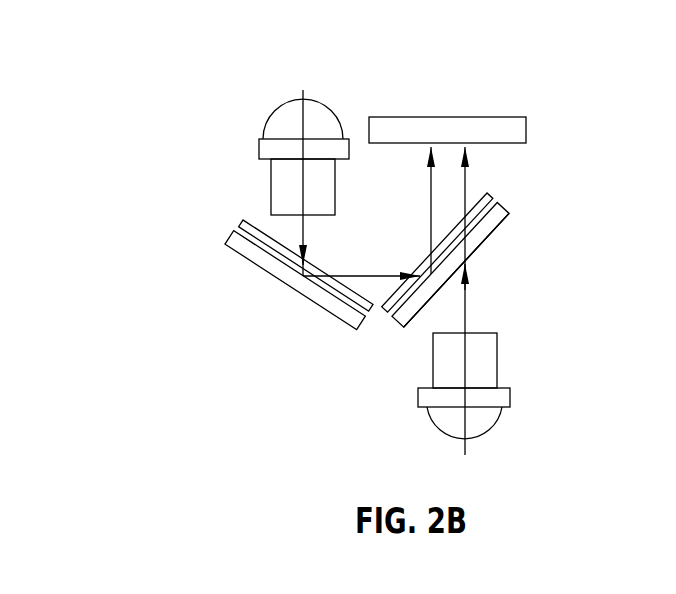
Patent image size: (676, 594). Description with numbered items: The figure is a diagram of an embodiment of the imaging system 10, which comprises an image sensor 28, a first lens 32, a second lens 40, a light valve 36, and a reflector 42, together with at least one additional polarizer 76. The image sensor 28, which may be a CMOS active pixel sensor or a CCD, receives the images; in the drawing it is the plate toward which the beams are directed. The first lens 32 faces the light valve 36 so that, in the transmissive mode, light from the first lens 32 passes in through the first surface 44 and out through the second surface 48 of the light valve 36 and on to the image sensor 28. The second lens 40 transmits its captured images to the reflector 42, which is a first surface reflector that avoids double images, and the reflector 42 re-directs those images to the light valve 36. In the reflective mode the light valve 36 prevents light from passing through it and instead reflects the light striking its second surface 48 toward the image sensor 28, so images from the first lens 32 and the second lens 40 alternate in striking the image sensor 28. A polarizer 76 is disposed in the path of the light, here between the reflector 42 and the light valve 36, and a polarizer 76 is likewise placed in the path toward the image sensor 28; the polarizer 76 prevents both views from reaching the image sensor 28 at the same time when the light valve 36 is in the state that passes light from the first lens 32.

The imaging system 10 is at (152, 70).
The image sensor 28 is at (493, 123).
The first lens 32 is at (485, 427).
The light valve 36 is at (494, 221).
The second lens 40 is at (286, 113).
The reflector 42 is at (258, 257).
The first surface 44 is at (487, 233).
The second surface 48 is at (480, 258).
The polarizer 76 is at (252, 222).